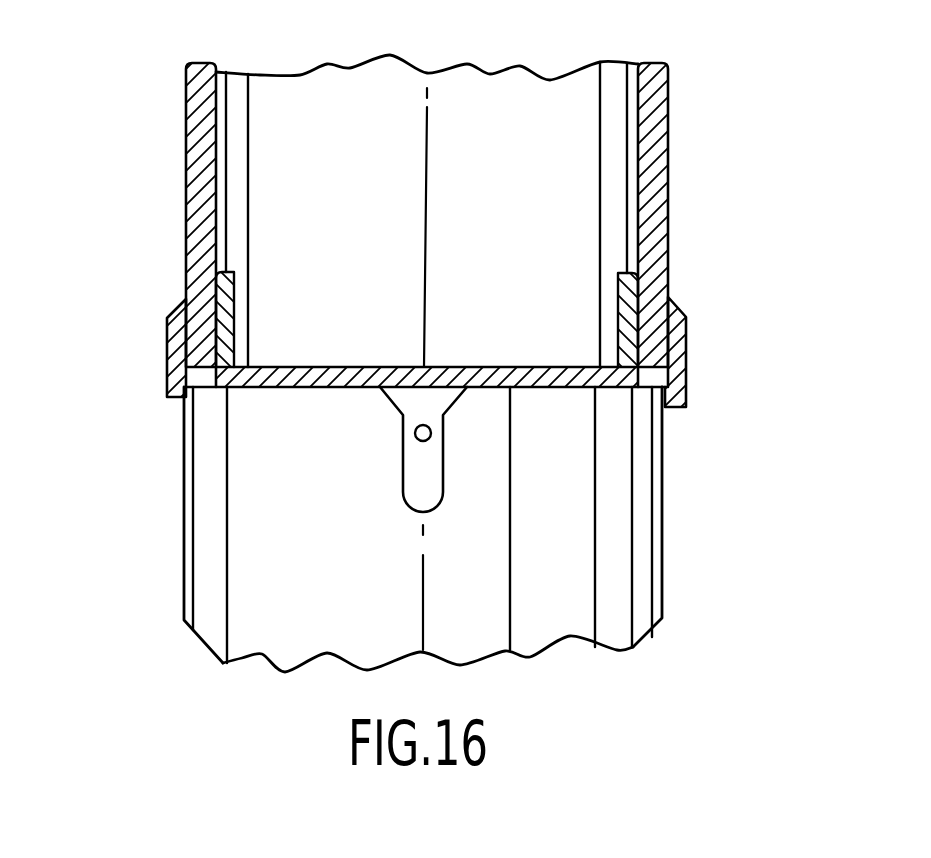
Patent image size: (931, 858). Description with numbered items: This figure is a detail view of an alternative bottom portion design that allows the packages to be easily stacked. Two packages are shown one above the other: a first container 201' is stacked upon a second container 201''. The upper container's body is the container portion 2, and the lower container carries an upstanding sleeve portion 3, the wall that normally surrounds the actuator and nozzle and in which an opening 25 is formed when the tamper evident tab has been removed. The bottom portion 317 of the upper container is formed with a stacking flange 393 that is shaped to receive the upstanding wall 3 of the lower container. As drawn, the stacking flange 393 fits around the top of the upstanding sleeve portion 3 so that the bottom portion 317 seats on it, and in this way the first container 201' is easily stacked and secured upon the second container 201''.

The container portion 2 is at (668, 181).
The upstanding sleeve portion 3 is at (240, 458).
The opening 25 is at (410, 460).
The first container 201' is at (143, 215).
The second container 201'' is at (698, 517).
The bottom portion 317 is at (688, 370).
The stacking flange 393 is at (167, 383).